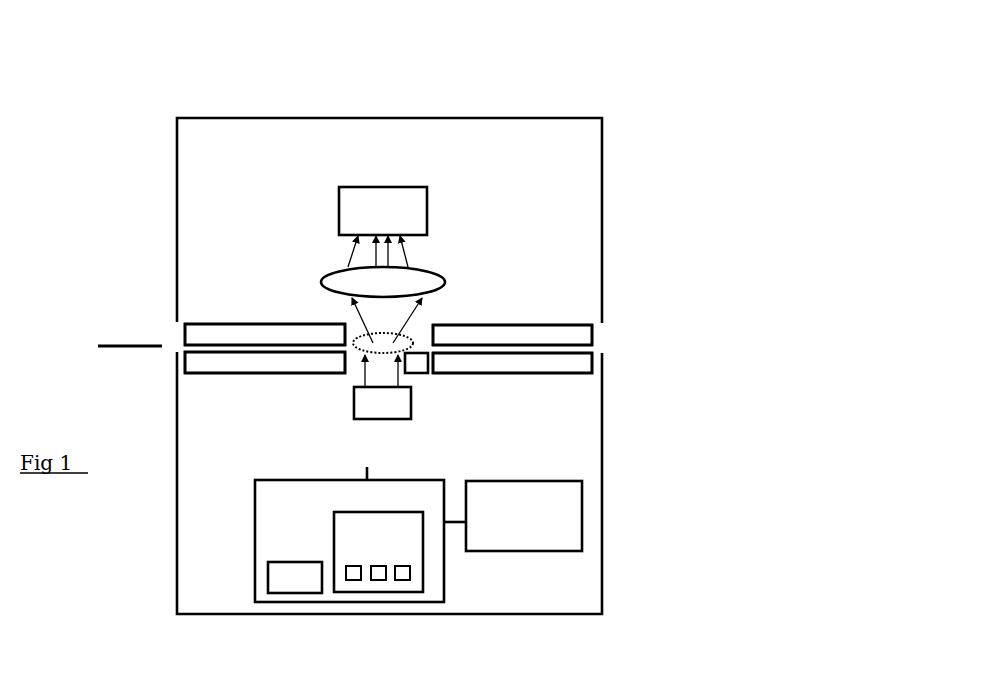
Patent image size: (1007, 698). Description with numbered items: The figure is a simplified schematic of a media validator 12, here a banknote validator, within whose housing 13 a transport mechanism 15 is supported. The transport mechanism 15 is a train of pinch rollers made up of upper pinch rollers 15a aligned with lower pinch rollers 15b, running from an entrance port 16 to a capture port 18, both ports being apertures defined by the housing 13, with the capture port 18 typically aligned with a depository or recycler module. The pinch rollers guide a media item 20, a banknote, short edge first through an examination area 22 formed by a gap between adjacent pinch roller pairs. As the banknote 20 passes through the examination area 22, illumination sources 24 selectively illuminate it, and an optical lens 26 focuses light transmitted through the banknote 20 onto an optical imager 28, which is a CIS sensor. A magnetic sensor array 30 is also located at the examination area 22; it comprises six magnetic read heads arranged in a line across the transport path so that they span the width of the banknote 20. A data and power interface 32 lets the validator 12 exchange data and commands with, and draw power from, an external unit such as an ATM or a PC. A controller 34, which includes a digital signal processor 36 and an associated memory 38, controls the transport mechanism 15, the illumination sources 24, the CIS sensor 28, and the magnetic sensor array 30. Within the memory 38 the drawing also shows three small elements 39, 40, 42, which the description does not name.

The media validator 12 is at (585, 70).
The housing 13 is at (601, 145).
The transport mechanism 15 is at (537, 388).
The upper pinch rollers 15a is at (207, 322).
The lower pinch rollers 15b is at (233, 367).
The entrance port 16 is at (175, 343).
The capture port 18 is at (602, 343).
The media item 20 is at (108, 342).
The examination area 22 is at (400, 333).
The illumination sources 24 is at (353, 396).
The optical lens 26 is at (383, 266).
The optical imager 28 is at (427, 187).
The magnetic sensor array 30 is at (418, 373).
The data and power interface 32 is at (582, 513).
The controller 34 is at (252, 513).
The digital signal processor 36 is at (267, 580).
The memory 38 is at (423, 577).
The memory location 39 is at (343, 580).
The memory location 40 is at (378, 580).
The memory location 42 is at (402, 580).